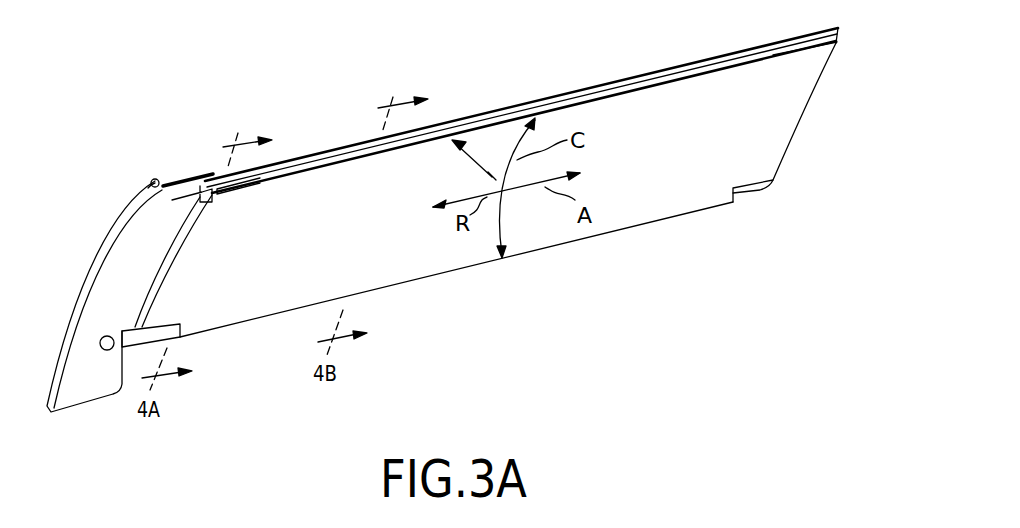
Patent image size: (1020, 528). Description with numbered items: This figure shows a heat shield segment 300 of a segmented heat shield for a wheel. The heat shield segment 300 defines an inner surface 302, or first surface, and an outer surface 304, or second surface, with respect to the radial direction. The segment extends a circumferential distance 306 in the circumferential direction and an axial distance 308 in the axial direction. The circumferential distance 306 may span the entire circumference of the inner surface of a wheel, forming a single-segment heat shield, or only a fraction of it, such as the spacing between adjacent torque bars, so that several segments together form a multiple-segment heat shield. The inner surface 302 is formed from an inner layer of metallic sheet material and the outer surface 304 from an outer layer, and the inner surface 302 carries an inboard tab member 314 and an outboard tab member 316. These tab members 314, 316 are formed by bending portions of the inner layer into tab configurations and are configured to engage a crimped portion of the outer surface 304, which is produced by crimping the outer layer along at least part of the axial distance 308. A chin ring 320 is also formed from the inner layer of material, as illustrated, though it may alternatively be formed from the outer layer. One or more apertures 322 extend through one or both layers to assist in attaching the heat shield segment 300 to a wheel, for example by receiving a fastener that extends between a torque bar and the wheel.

The heat shield segment 300 is at (127, 98).
The inner surface 302 is at (248, 293).
The outer surface 304 is at (318, 197).
The circumferential distance 306 is at (508, 222).
The axial distance 308 is at (483, 198).
The inboard tab member 314 is at (230, 193).
The outboard tab member 316 is at (787, 53).
The chin ring 320 is at (83, 260).
The aperture 322 is at (173, 193).